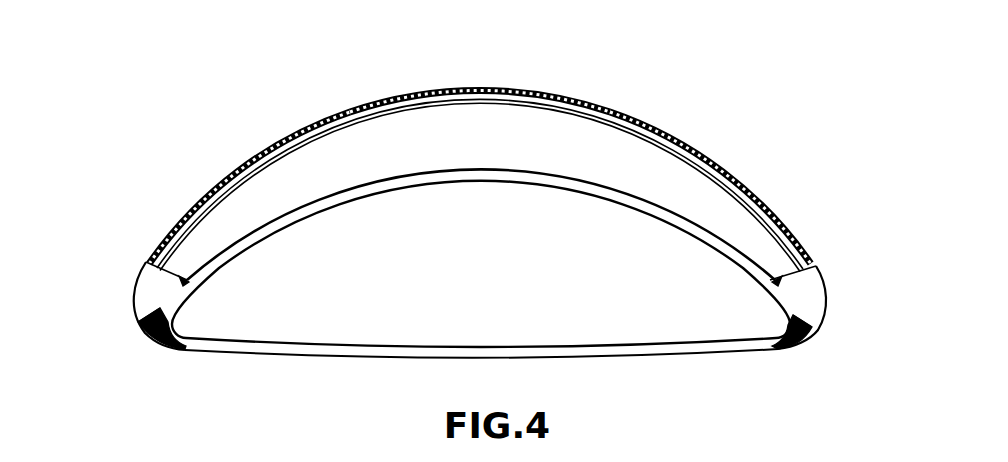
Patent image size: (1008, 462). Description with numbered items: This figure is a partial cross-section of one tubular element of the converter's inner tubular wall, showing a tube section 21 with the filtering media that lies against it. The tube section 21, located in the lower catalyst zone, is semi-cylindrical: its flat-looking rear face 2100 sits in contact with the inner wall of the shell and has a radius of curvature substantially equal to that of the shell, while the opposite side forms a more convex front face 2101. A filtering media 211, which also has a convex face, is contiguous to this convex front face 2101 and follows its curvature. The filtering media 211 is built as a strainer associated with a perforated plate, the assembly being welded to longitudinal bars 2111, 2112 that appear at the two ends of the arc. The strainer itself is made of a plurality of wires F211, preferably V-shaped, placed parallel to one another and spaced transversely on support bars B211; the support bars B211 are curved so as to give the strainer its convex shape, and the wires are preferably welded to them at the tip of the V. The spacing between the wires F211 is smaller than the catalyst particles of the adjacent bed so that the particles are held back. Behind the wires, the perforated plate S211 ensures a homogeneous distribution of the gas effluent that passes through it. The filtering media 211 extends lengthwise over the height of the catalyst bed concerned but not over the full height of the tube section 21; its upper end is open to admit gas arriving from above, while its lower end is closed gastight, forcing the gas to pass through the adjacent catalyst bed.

The tube section 21 is at (390, 318).
The filtering media 211 is at (226, 170).
The wires F211 is at (338, 112).
The perforated plate S211 is at (397, 100).
The support bars B211 is at (633, 117).
The front face 2101 is at (673, 212).
The rear face 2100 is at (668, 355).
The longitudinal bar 2111 is at (152, 293).
The longitudinal bar 2112 is at (815, 292).